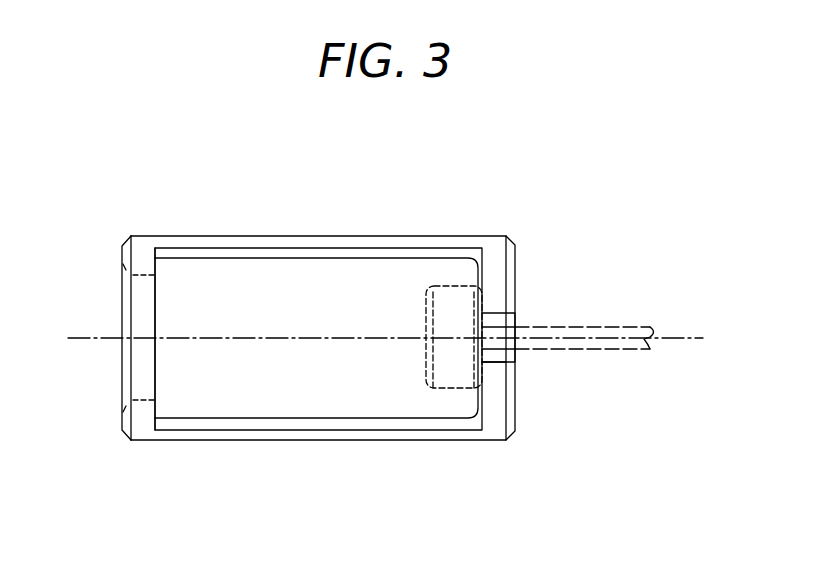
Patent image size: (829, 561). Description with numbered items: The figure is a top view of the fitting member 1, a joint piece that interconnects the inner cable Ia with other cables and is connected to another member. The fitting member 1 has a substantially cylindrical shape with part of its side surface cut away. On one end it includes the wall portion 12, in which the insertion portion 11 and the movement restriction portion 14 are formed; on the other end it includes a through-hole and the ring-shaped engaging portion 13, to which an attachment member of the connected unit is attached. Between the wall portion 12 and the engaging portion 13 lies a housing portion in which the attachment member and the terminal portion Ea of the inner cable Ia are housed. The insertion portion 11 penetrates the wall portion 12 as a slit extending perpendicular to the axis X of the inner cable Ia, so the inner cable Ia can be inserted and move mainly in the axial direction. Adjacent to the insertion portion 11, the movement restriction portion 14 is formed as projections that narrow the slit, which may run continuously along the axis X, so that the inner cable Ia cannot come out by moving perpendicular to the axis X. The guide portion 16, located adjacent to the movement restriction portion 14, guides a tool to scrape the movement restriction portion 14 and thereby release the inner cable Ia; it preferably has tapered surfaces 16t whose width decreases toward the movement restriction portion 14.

The fitting member 1 is at (303, 195).
The insertion portion 11 is at (506, 333).
The wall portion 12 is at (498, 272).
The engaging portion 13 is at (143, 260).
The movement restriction portion 14 is at (504, 346).
The guide portion 16 is at (478, 353).
The tapered surfaces 16t is at (491, 355).
The terminal portion Ea is at (446, 305).
The axis X is at (690, 338).
The inner cable Ia is at (630, 350).